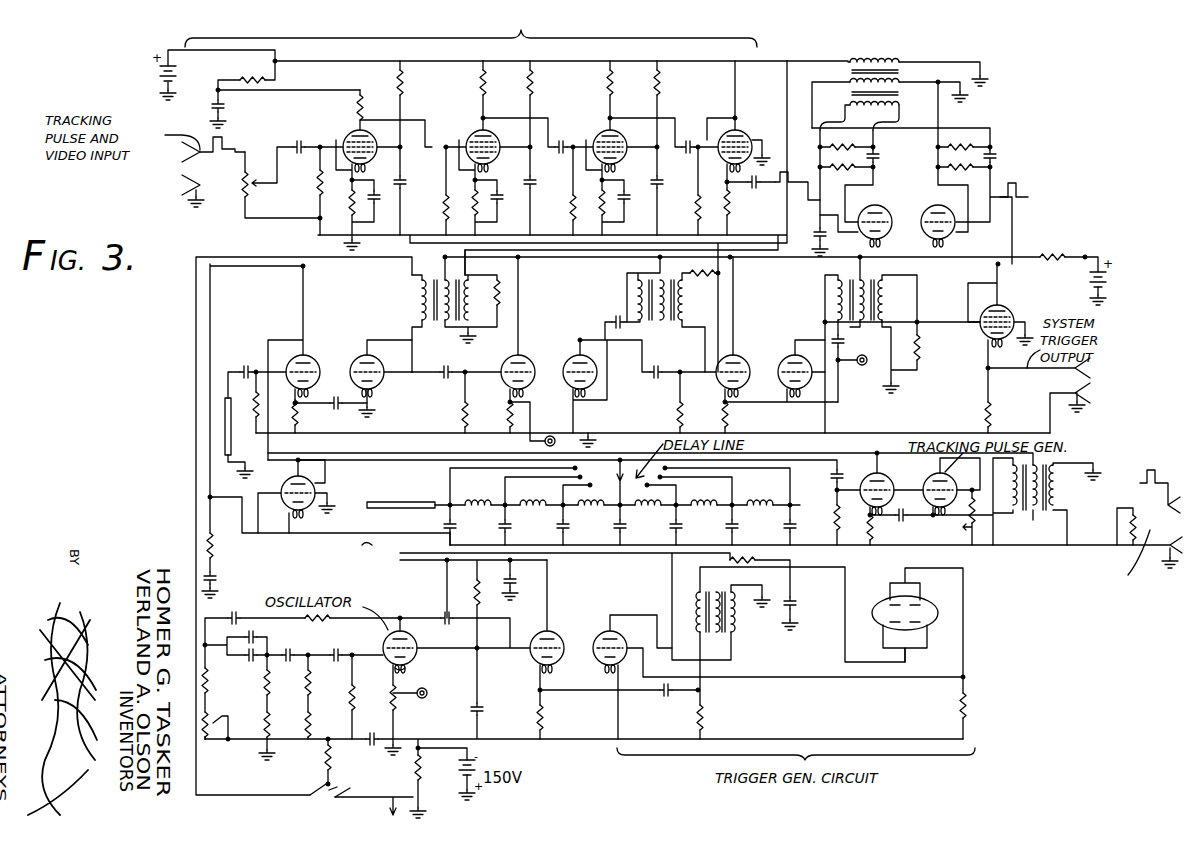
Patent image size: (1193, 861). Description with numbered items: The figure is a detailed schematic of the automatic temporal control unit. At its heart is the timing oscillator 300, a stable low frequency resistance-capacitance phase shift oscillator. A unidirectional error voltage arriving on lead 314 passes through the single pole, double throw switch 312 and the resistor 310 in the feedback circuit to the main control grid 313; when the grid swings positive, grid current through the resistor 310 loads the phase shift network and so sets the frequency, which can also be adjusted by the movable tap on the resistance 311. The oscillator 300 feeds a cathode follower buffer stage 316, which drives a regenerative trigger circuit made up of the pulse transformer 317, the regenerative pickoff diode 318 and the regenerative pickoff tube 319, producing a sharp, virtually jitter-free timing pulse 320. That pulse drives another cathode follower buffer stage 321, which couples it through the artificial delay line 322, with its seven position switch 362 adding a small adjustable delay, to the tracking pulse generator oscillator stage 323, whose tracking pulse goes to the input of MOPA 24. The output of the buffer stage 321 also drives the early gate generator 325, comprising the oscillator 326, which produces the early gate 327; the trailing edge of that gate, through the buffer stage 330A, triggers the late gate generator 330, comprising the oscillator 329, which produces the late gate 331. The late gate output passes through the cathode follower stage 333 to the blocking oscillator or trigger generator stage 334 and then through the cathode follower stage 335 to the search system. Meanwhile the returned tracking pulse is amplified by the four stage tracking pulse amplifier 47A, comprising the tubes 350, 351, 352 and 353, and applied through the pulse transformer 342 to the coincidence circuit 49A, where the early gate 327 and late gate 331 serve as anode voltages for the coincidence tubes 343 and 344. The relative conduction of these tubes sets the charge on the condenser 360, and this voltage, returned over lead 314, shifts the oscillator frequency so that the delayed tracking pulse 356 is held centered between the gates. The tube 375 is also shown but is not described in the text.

The tracking pulse amplifier 47A is at (471, 29).
The pulse transformer 342 is at (906, 53).
The coincidence circuit 49A is at (995, 116).
The tube 350 is at (350, 133).
The tube 351 is at (472, 134).
The tube 352 is at (599, 134).
The tube 353 is at (748, 132).
The delayed tracking pulse 356 is at (226, 138).
The coincidence tube 343 is at (877, 205).
The coincidence tube 344 is at (946, 239).
The condenser 360 is at (826, 242).
The late gate 331 is at (1034, 173).
The early gate 327 is at (775, 206).
The early gate generator 325 is at (393, 291).
The late gate generator 330 is at (614, 266).
The oscillator 326 is at (356, 352).
The amplifier tube 375 is at (323, 348).
The buffer stage 330A is at (483, 351).
The oscillator 329 is at (574, 352).
The cathode follower stage 333 is at (766, 356).
The trigger generator stage 334 is at (830, 272).
The cathode follower stage 335 is at (980, 331).
The cathode follower buffer stage 321 is at (428, 492).
The delay line 322 is at (408, 497).
The timing pulse 320 is at (366, 546).
The seven position switch 362 is at (618, 461).
The tracking pulse generator oscillator stage 323 is at (940, 476).
The MOPA 24 is at (1095, 582).
The timing oscillator 300 is at (429, 641).
The main control grid 313 is at (418, 668).
The resistance 311 is at (214, 720).
The resistor 310 is at (353, 680).
The lead 314 is at (322, 790).
The single pole, double throw switch 312 is at (335, 818).
The cathode follower buffer stage 316 is at (536, 640).
The regenerative pickoff tube 319 is at (596, 640).
The pulse transformer 317 is at (752, 628).
The regenerative pickoff diode 318 is at (918, 608).